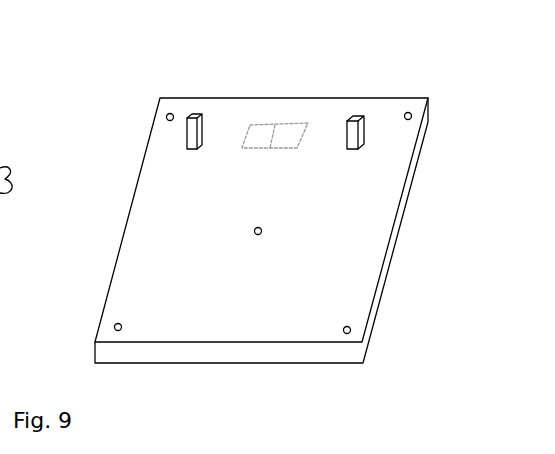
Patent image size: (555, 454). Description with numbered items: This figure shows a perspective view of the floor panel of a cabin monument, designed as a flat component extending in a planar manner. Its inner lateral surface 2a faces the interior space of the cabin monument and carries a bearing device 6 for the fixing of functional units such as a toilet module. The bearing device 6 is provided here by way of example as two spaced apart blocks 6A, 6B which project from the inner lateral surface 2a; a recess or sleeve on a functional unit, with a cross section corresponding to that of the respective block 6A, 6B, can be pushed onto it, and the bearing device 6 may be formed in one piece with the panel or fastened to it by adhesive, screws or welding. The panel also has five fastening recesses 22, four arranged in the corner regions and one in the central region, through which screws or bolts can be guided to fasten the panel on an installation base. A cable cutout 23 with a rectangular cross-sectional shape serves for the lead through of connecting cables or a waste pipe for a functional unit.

The bearing device 6 is at (362, 64).
The inner lateral surface 2a is at (305, 243).
The block 6A is at (197, 116).
The block 6B is at (362, 116).
The fastening recesses 22 is at (166, 117).
The cable cutout 23 is at (278, 124).